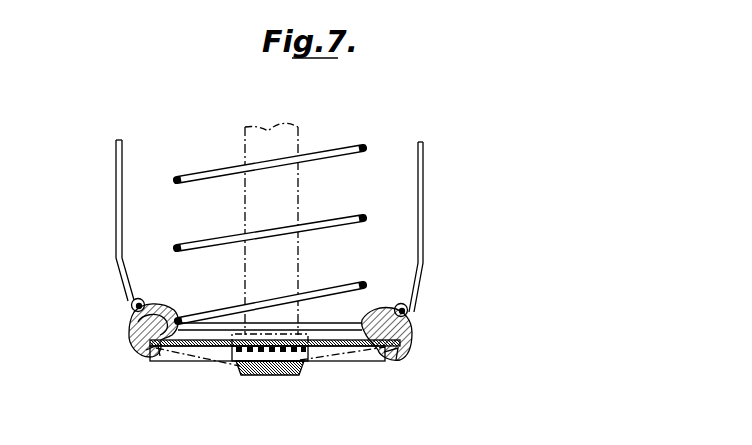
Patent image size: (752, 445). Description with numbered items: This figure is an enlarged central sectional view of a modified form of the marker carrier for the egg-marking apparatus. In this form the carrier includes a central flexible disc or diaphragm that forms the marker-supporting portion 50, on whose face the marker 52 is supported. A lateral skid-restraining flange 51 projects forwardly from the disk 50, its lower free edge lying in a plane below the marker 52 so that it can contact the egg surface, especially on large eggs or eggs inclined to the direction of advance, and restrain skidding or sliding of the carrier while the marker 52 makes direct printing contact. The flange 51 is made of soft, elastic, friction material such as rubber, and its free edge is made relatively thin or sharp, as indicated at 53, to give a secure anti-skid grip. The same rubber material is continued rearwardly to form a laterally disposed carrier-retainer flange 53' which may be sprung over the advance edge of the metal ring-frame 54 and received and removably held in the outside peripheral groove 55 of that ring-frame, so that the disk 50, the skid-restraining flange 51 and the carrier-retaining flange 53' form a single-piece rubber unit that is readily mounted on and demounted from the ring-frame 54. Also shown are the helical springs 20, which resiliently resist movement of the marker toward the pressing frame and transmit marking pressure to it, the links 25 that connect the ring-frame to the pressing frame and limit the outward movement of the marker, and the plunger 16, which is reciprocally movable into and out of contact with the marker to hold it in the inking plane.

The plunger 16 is at (243, 198).
The helical spring 20 is at (330, 219).
The link 25 is at (122, 200).
The marker-supporting disk 50 is at (337, 347).
The skid-restraining flange 51 is at (140, 351).
The marker 52 is at (267, 352).
The thin free edge of flange 53 is at (272, 378).
The carrier-retainer flange 53' is at (228, 305).
The ring-frame 54 is at (167, 310).
The peripheral groove 55 is at (134, 330).